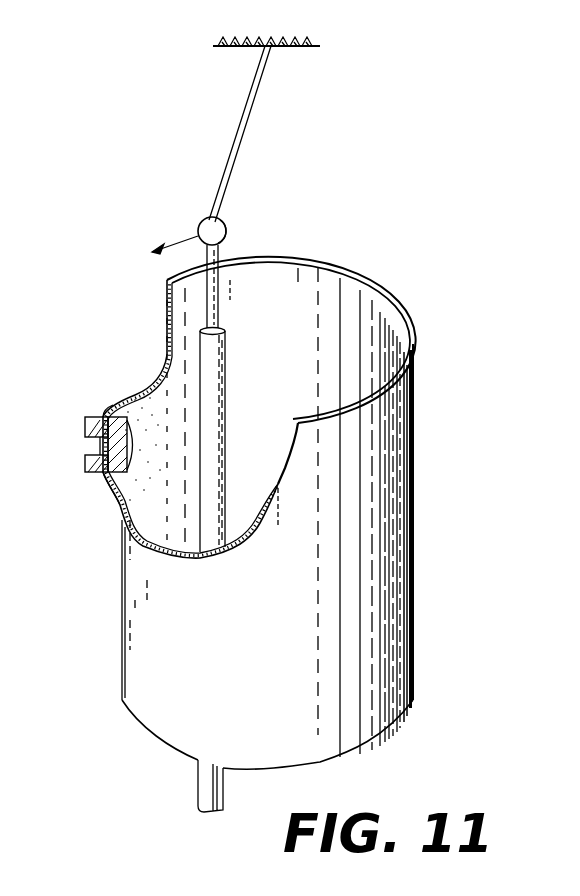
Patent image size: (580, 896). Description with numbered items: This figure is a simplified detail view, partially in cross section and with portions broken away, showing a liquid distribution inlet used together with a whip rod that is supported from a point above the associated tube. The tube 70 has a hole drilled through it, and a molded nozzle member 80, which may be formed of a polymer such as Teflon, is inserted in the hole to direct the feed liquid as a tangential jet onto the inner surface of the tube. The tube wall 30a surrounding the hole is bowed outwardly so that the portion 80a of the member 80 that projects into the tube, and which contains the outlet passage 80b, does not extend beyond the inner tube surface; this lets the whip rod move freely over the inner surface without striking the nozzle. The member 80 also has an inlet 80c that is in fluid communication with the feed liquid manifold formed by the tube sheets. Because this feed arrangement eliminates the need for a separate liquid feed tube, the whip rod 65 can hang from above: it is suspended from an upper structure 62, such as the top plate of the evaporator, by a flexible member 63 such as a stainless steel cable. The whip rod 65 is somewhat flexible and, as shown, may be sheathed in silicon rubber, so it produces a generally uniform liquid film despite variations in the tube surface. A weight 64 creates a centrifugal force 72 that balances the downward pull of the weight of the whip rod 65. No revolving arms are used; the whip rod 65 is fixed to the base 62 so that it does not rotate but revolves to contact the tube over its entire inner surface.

The upper structure 62 is at (263, 44).
The flexible member 63 is at (247, 130).
The weight 64 is at (227, 231).
The whip rod 65 is at (226, 423).
The cylindrical housing 70 is at (355, 273).
The centrifugal force 72 is at (183, 237).
The nozzle member 80 is at (100, 414).
The projecting portion 80a is at (117, 406).
The outlet passage 80b is at (133, 445).
The inlet 80c is at (83, 448).
The tube wall 30a is at (106, 495).